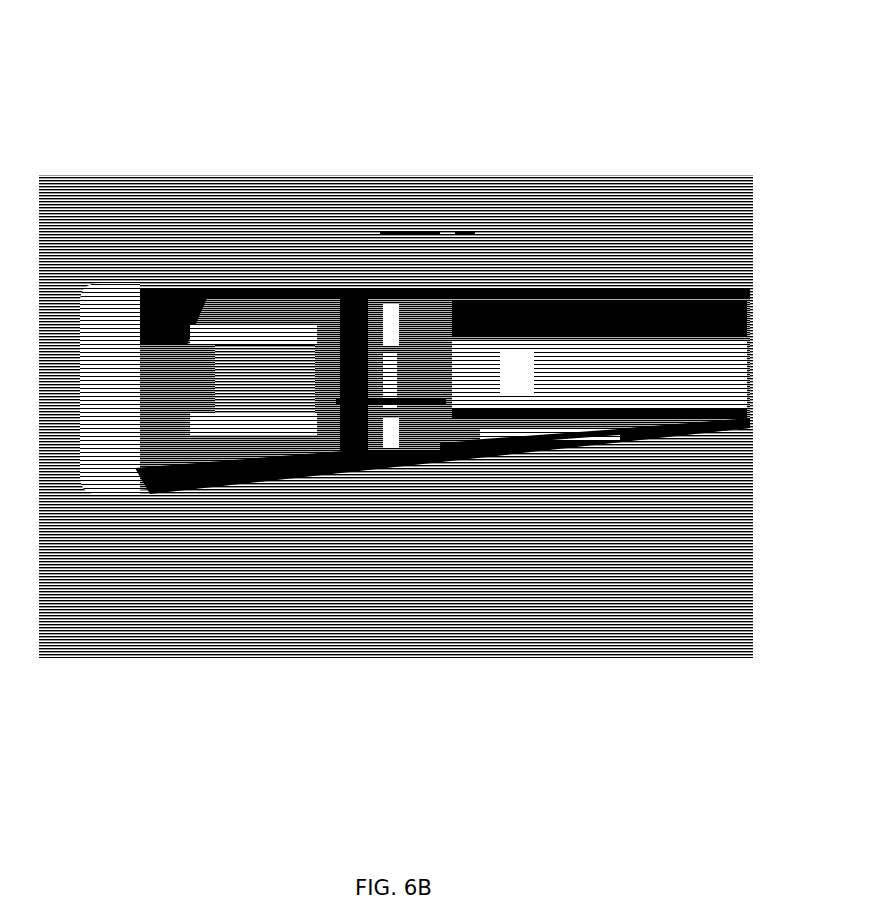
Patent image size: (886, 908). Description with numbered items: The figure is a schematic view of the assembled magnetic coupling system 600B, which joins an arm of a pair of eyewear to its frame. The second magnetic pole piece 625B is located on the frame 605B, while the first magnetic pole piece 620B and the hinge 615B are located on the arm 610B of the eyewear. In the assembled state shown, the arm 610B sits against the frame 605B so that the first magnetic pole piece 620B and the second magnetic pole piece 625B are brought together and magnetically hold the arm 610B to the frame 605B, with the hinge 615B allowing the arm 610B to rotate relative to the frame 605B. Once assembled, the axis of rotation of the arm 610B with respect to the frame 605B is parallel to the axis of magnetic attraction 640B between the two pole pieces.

The magnetic coupling system 600B is at (420, 286).
The frame 605B is at (157, 325).
The arm 610B is at (678, 312).
The hinge 615B is at (400, 452).
The first magnetic pole piece 620B is at (392, 446).
The second magnetic pole piece 625B is at (318, 380).
The axis of magnetic attraction 640B is at (593, 448).